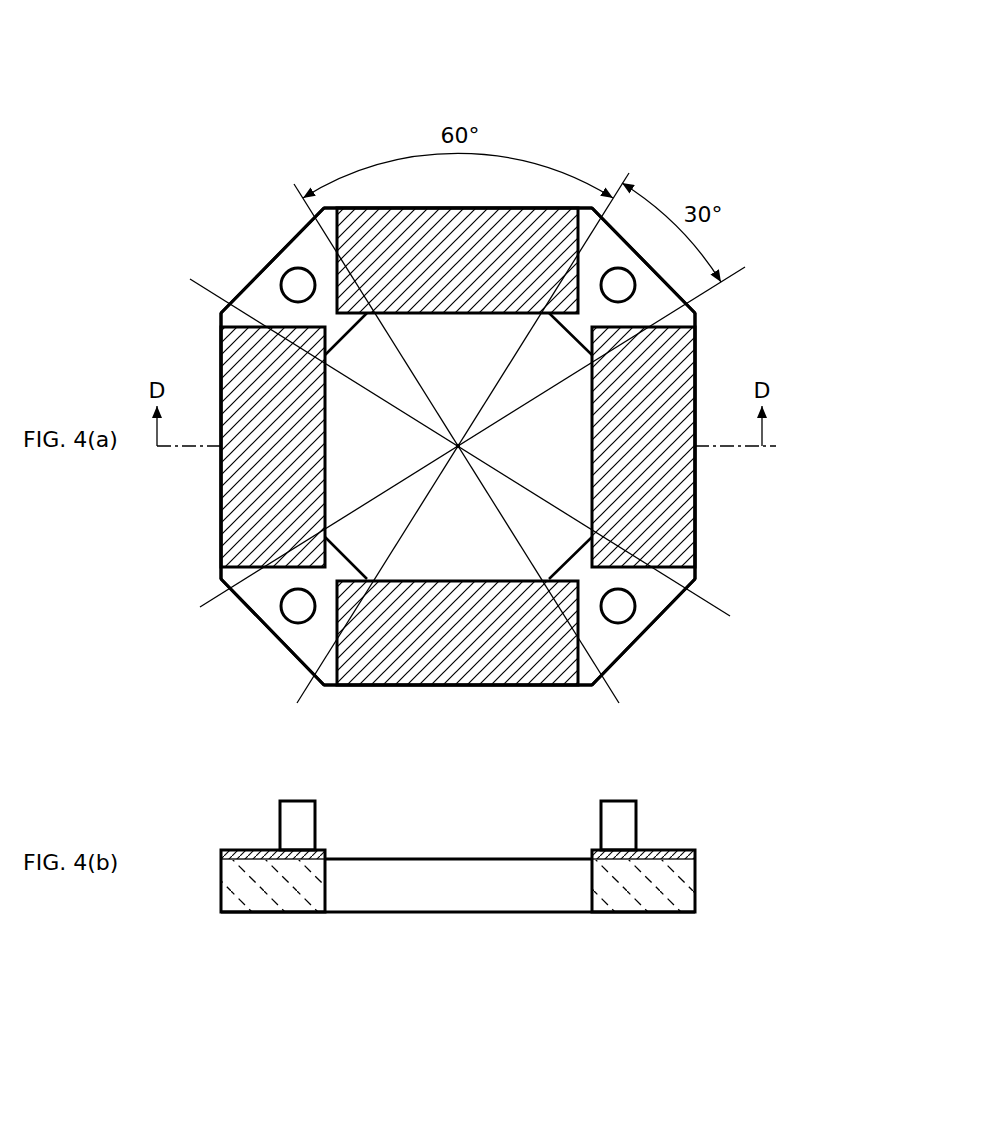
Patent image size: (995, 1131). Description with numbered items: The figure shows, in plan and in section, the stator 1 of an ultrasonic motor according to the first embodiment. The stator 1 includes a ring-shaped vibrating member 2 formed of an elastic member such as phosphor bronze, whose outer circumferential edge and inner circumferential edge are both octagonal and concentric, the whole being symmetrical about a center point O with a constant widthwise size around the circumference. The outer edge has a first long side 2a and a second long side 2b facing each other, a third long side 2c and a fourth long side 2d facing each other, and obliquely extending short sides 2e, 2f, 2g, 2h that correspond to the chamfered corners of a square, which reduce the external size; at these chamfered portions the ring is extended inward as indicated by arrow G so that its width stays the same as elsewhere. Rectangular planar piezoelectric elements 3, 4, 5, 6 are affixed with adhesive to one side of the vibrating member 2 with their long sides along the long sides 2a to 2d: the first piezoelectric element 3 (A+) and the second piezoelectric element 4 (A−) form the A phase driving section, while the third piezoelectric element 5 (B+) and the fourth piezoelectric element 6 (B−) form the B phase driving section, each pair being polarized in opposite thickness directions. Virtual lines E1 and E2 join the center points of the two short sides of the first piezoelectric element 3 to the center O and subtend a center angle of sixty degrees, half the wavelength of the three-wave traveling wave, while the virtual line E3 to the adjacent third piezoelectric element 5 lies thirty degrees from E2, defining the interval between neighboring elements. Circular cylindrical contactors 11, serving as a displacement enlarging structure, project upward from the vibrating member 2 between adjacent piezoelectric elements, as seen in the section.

In FIG. 4A, the stator 1 is at (243, 118).
In FIG. 4B, the stator 1 is at (220, 915).
In FIG. 4A, the vibrating member 2 is at (238, 296).
In FIG. 4B, the vibrating member 2 is at (507, 898).
In FIG. 4A, the first long side 2a is at (462, 208).
In FIG. 4A, the second long side 2b is at (430, 686).
In FIG. 4A, the third long side 2c is at (697, 345).
In FIG. 4A, the fourth long side 2d is at (220, 353).
In FIG. 4A, the first short side 2e is at (655, 270).
In FIG. 4A, the second short side 2f is at (290, 649).
In FIG. 4A, the third short side 2g is at (625, 652).
In FIG. 4A, the fourth short side 2h is at (296, 235).
In FIG. 4A, the first piezoelectric element 3 is at (515, 240).
In FIG. 4A, the second piezoelectric element 4 is at (490, 668).
In FIG. 4A, the third piezoelectric element 5 is at (672, 385).
In FIG. 4B, the third piezoelectric element 5 is at (675, 851).
In FIG. 4A, the fourth piezoelectric element 6 is at (232, 488).
In FIG. 4B, the fourth piezoelectric element 6 is at (252, 855).
In FIG. 4A, the contactor 11 is at (287, 273).
In FIG. 4B, the contactor 11 is at (316, 812).
In FIG. 4A, the center point O is at (462, 449).
In FIG. 4A, the arrow indicating inward extension G is at (353, 340).
In FIG. 4A, the virtual line E1 is at (299, 193).
In FIG. 4A, the virtual line E2 is at (624, 185).
In FIG. 4A, the virtual line E3 is at (720, 283).